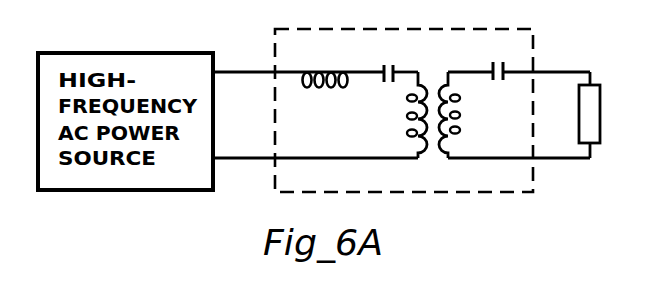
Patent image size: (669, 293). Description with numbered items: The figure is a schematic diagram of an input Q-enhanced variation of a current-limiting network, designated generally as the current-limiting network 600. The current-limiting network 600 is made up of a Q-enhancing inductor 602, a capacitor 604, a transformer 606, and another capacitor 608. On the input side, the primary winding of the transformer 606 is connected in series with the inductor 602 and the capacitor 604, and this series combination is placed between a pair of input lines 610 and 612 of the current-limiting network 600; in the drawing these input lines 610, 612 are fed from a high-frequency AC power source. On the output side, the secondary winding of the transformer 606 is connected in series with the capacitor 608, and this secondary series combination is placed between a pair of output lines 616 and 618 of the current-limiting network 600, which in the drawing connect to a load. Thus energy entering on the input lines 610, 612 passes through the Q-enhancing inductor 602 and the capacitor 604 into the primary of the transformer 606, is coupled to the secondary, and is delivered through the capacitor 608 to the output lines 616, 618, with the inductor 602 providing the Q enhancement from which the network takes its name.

The current-limiting network 600 is at (442, 192).
The Q-enhancing inductor 602 is at (345, 61).
The capacitor 604 is at (384, 66).
The transformer 606 is at (409, 117).
The capacitor 608 is at (493, 65).
The input line 610 is at (261, 72).
The input line 612 is at (246, 161).
The output line 616 is at (557, 70).
The output line 618 is at (505, 161).